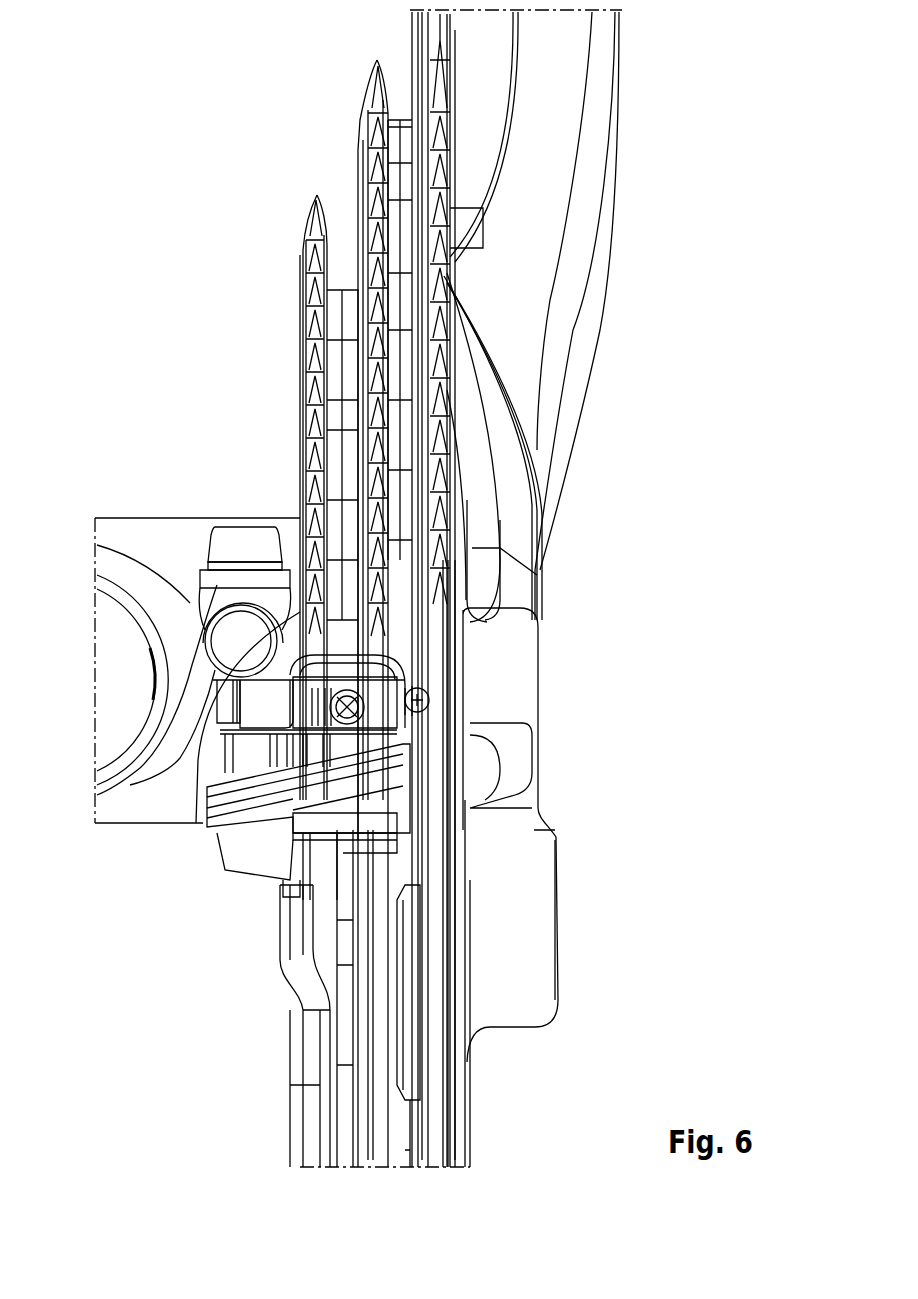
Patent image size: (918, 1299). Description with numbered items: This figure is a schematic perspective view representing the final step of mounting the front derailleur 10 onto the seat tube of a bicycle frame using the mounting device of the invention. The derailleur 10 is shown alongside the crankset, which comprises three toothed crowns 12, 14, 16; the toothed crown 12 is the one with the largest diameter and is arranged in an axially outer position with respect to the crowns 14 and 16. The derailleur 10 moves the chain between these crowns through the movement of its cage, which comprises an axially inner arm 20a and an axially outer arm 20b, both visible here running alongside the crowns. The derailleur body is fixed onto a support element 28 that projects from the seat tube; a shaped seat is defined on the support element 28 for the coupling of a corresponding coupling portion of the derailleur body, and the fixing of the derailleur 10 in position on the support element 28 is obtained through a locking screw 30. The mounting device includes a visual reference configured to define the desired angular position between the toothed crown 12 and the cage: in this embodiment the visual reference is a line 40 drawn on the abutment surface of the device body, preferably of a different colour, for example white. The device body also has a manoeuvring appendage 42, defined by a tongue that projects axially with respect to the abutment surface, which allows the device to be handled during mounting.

The front derailleur 10 is at (199, 836).
The toothed crown 12 is at (428, 48).
The toothed crown 14 is at (367, 127).
The toothed crown 16 is at (303, 308).
The axially inner arm 20a is at (280, 963).
The axially outer arm 20b is at (440, 1133).
The support element 28 is at (188, 627).
The locking screw 30 is at (250, 530).
The line 40 is at (452, 825).
The manoeuvring appendage 42 is at (527, 922).